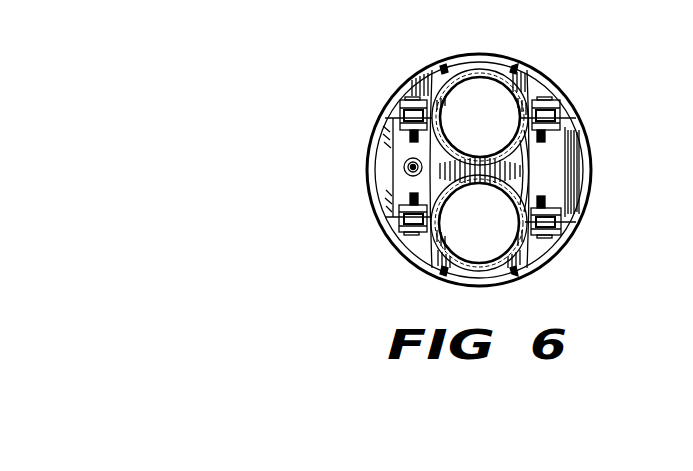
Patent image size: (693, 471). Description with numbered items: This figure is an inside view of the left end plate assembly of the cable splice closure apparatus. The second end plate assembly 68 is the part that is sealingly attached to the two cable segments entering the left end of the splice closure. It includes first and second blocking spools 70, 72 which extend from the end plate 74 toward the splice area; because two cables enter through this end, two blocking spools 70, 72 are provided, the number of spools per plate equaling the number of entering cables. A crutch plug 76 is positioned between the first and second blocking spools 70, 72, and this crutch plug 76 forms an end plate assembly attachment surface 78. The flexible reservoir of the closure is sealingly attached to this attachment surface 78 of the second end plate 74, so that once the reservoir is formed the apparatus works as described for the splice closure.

The second end plate assembly 68 is at (562, 82).
The first blocking spool 70 is at (447, 140).
The second blocking spool 72 is at (447, 246).
The end plate 74 is at (385, 158).
The crutch plug 76 is at (520, 190).
The end plate assembly attachment surface 78 is at (528, 172).